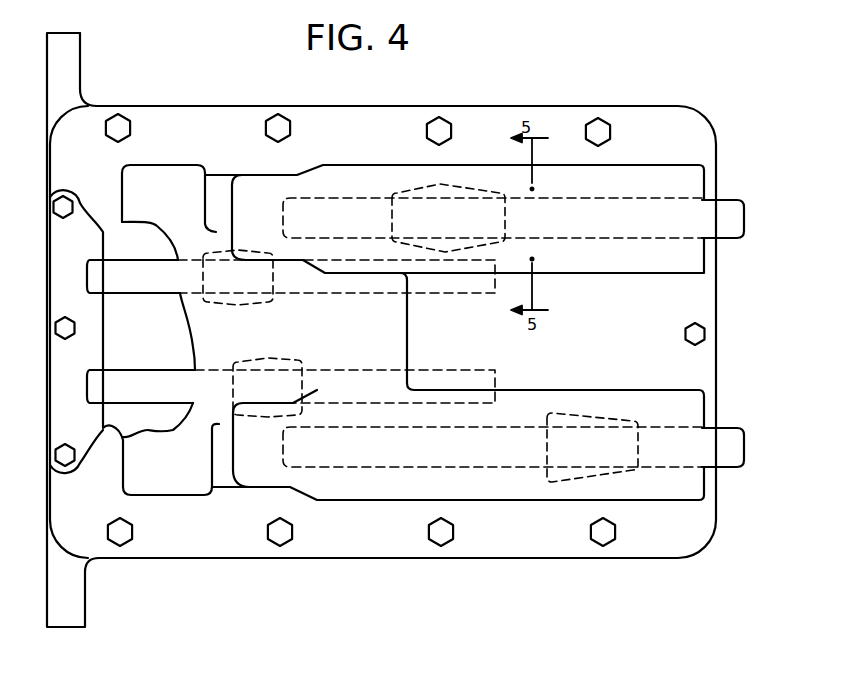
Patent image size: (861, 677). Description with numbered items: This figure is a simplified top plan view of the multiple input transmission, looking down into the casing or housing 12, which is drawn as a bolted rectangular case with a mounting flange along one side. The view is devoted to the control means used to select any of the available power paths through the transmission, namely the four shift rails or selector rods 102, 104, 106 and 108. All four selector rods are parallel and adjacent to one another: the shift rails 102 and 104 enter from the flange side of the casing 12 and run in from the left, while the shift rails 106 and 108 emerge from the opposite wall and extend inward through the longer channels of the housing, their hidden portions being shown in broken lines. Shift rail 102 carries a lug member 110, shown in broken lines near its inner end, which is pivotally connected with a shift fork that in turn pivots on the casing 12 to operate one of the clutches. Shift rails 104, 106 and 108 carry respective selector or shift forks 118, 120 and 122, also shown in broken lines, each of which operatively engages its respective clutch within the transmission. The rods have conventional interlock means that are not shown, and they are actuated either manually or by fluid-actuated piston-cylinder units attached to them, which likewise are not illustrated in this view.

The casing or housing 12 is at (77, 603).
The shift rail 102 is at (133, 265).
The shift rail 104 is at (137, 378).
The shift rail 106 is at (735, 206).
The shift rail 108 is at (728, 432).
The lug member 110 is at (252, 300).
The shift fork 118 is at (290, 357).
The shift fork 120 is at (420, 193).
The shift fork 122 is at (592, 418).